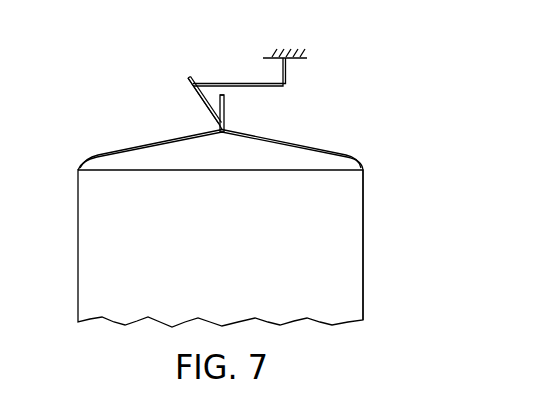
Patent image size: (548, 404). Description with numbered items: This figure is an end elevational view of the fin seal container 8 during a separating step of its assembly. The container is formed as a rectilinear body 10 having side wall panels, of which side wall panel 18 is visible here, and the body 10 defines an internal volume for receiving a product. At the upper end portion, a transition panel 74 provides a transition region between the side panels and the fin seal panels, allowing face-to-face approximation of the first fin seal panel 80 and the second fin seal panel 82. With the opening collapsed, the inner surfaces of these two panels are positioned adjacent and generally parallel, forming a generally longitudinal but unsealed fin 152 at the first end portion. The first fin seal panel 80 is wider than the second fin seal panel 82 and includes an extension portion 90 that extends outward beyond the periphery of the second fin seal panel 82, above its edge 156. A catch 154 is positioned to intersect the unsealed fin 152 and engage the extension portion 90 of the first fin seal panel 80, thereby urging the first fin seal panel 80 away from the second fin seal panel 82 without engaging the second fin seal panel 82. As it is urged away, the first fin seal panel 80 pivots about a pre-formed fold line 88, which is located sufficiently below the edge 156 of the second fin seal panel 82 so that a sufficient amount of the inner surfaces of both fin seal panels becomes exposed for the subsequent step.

The fin seal container 8 is at (395, 168).
The body 10 is at (367, 227).
The side wall panel 18 is at (232, 274).
The transition panel 74 is at (230, 164).
The first fin seal panel 80 is at (200, 93).
The second fin seal panel 82 is at (226, 117).
The pre-formed fold line 88 is at (217, 120).
The extension portion 90 is at (188, 77).
The unsealed fin 152 is at (177, 75).
The catch 154 is at (267, 87).
The edge 156 is at (222, 95).